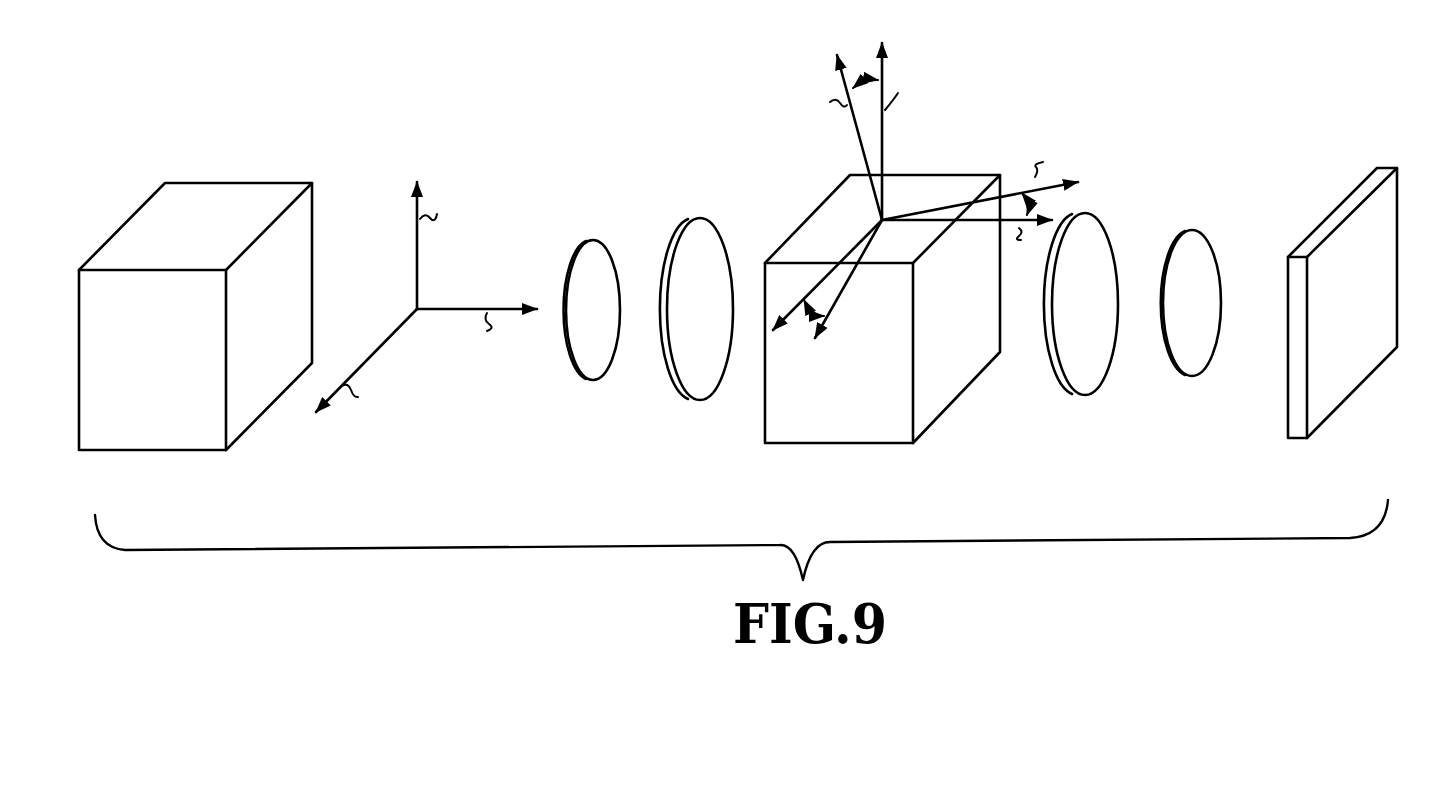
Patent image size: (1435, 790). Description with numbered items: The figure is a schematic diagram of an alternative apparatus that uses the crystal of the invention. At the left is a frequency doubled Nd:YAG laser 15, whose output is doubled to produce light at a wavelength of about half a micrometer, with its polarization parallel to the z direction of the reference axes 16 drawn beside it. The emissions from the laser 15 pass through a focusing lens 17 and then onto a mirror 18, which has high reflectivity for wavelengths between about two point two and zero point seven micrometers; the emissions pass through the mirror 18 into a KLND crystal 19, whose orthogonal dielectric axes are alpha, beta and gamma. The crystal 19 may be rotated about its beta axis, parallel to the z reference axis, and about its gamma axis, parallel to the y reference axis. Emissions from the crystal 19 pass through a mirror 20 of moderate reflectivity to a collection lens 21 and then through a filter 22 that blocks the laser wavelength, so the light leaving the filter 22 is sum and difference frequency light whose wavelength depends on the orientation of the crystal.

The frequency doubled Nd:YAG laser 15 is at (172, 428).
The reference axes 16 is at (452, 313).
The focusing lens 17 is at (588, 353).
The mirror 18 is at (695, 355).
The KLND crystal 19 is at (857, 413).
The mirror 20 is at (1082, 352).
The collection lens 21 is at (1190, 348).
The filter 22 is at (1325, 357).